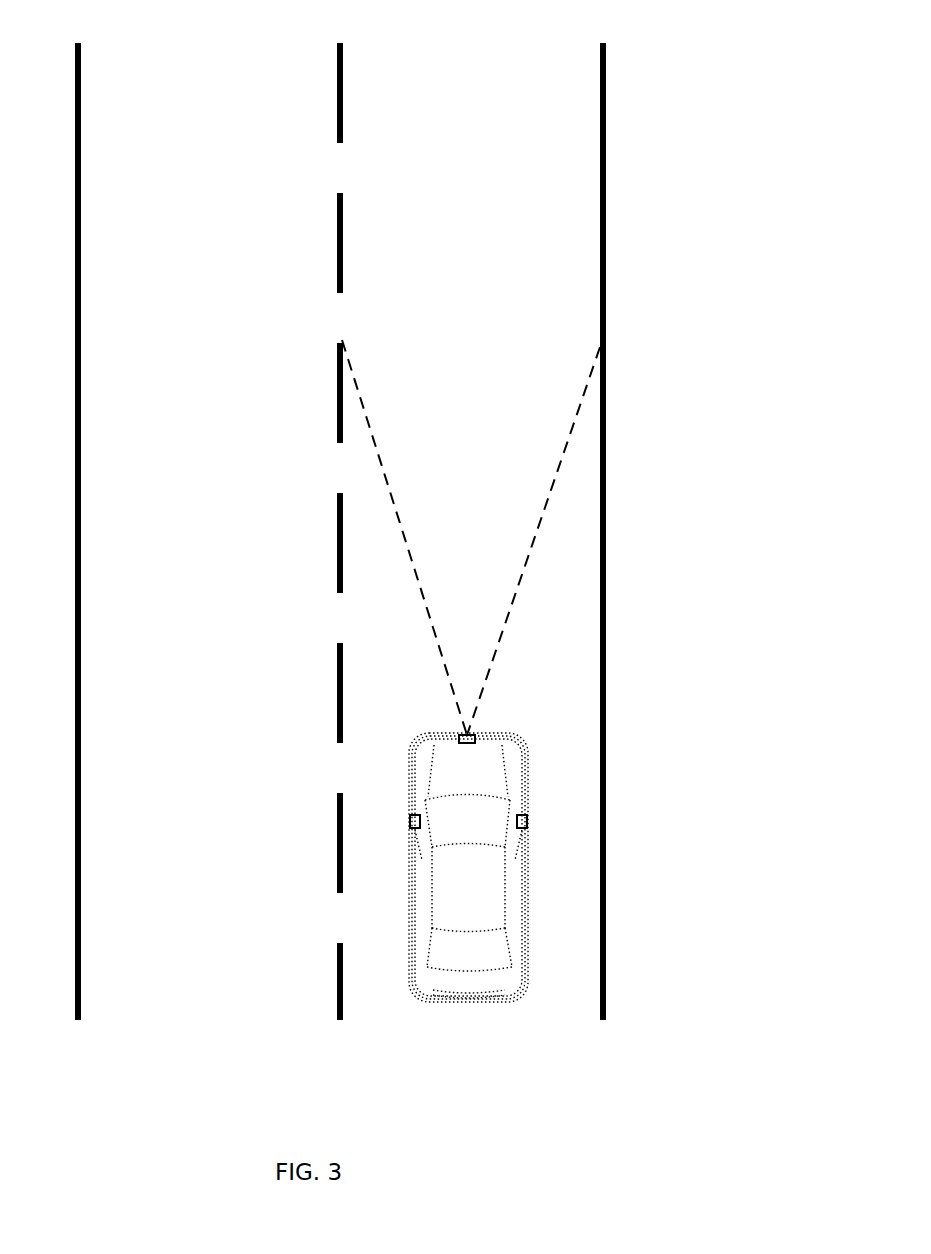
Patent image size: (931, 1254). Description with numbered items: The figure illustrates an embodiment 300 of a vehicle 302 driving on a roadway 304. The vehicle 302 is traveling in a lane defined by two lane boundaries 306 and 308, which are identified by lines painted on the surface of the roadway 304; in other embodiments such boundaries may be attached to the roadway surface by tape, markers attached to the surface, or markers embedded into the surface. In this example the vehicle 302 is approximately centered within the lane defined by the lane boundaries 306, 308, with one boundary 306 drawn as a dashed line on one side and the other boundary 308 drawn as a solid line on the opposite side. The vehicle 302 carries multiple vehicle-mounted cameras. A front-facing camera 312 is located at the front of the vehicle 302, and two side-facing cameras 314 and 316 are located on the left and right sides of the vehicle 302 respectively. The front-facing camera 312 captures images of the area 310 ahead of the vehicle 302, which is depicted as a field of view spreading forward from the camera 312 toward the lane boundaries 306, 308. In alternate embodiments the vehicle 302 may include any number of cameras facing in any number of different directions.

The embodiment 300 is at (704, 60).
The vehicle 302 is at (488, 900).
The roadway 304 is at (307, 630).
The lane boundary 306 is at (340, 225).
The lane boundary 308 is at (603, 225).
The area ahead of vehicle 310 is at (537, 542).
The front-facing camera 312 is at (458, 733).
The side-facing camera 314 is at (410, 818).
The side-facing camera 316 is at (528, 820).